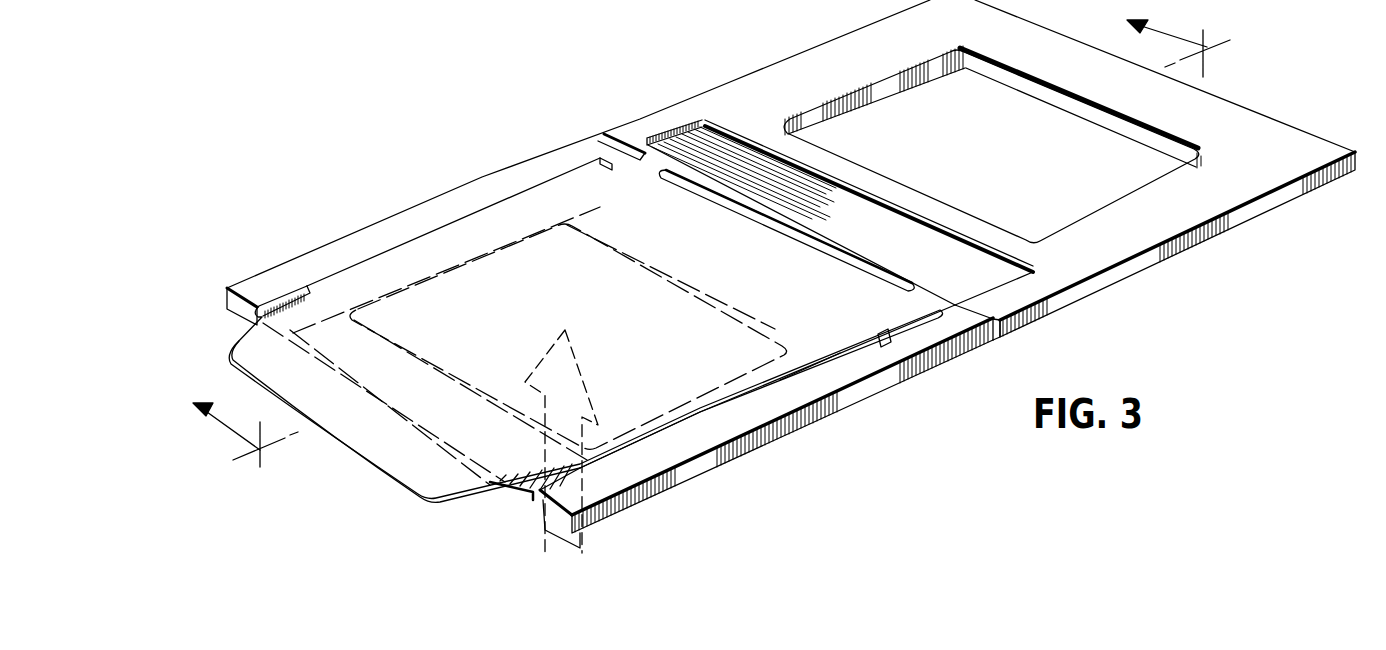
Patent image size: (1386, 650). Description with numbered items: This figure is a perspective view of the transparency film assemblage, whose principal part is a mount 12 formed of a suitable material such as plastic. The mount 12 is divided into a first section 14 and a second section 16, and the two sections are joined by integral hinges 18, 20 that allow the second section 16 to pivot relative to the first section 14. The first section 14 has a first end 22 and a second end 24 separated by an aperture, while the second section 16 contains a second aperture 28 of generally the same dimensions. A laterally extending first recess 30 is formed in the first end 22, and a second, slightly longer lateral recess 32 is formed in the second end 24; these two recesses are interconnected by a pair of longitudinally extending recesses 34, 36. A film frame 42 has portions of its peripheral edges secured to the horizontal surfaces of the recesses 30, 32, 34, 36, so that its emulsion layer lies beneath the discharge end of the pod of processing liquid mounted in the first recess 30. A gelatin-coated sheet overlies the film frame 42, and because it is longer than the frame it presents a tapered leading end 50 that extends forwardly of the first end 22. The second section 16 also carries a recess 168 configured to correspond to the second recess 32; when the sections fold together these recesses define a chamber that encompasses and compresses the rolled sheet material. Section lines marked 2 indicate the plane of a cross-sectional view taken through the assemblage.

The section line 2- 2 is at (712, 253).
The mount 12 is at (480, 173).
The first section 14 is at (673, 450).
The second section 16 is at (1133, 247).
The integral hinge 18 is at (778, 157).
The integral hinge 20 is at (940, 293).
The first end 22 is at (517, 492).
The second end 24 is at (952, 330).
The second aperture 28 is at (1088, 112).
The first recess 30 is at (280, 290).
The second recess 32 is at (602, 150).
The longitudinally extending recess 34 is at (440, 247).
The longitudinally extending recess 36 is at (787, 382).
The film frame 42 is at (932, 337).
The tapered leading end 50 is at (248, 364).
The recess 168 is at (760, 160).